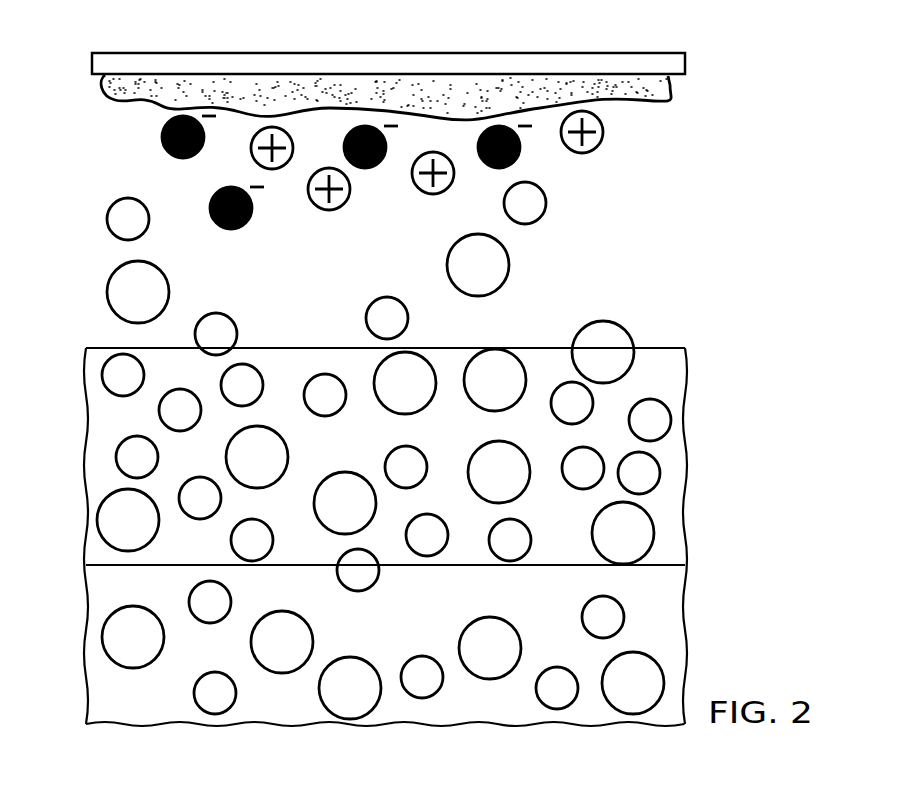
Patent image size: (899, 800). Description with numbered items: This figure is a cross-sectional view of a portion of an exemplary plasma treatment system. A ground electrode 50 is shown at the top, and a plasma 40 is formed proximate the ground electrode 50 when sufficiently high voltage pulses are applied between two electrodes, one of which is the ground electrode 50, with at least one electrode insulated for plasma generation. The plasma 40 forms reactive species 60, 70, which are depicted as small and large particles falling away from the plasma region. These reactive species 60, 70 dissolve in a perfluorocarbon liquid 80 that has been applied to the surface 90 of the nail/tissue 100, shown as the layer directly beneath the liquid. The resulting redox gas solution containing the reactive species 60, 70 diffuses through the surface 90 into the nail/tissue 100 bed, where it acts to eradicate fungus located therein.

The plasma 40 is at (700, 80).
The ground electrode 50 is at (91, 64).
The reactive species 60 is at (546, 201).
The reactive species 70 is at (107, 292).
The perfluorocarbon liquid 80 is at (662, 355).
The surface 90 is at (668, 565).
The nail/tissue 100 is at (97, 592).